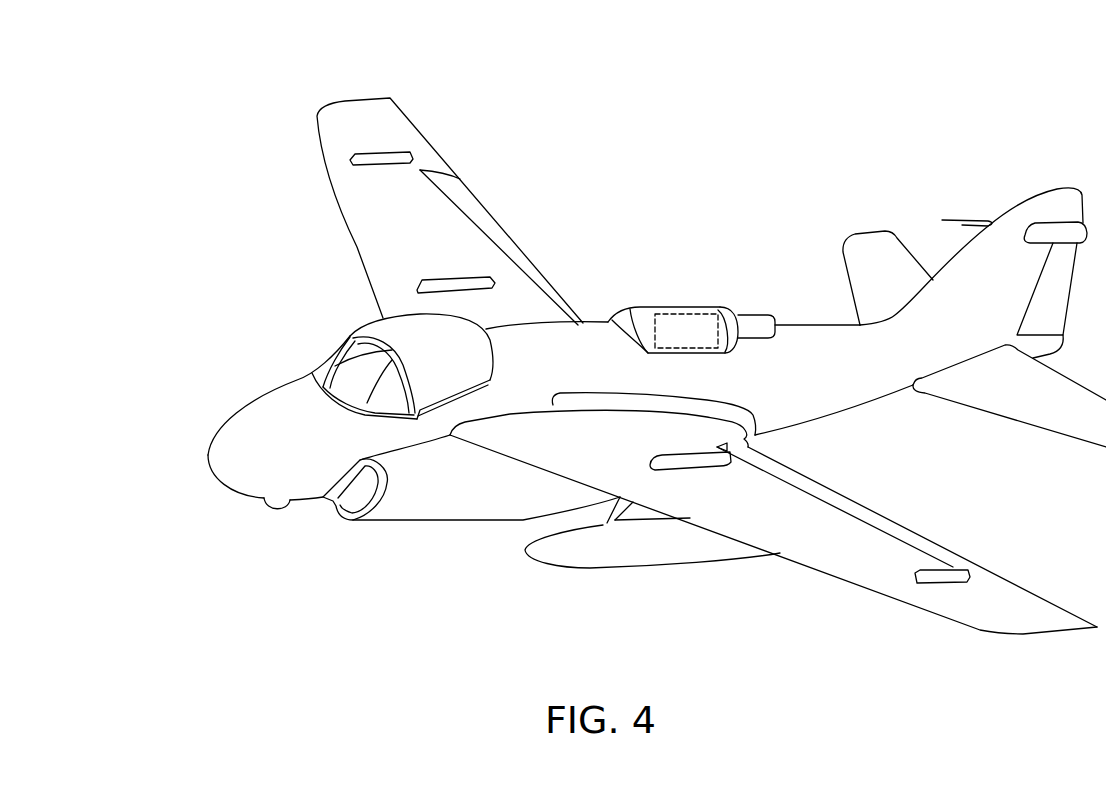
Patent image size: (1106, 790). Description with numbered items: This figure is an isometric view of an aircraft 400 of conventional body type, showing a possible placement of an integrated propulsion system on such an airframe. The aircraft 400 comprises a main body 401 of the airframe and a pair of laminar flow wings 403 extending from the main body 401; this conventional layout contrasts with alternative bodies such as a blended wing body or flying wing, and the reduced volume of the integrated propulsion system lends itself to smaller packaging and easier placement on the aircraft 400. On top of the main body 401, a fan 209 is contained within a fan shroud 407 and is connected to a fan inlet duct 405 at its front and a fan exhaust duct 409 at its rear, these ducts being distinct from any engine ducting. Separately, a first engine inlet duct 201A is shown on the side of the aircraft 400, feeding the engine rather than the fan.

The aircraft 400 is at (212, 86).
The laminar flow wings 403 is at (363, 97).
The main body 401 is at (503, 320).
The fan inlet duct 405 is at (628, 310).
The fan shroud 407 is at (655, 305).
The fan exhaust duct 409 is at (743, 312).
The fan 209 is at (703, 341).
The first engine inlet duct 201A is at (398, 493).